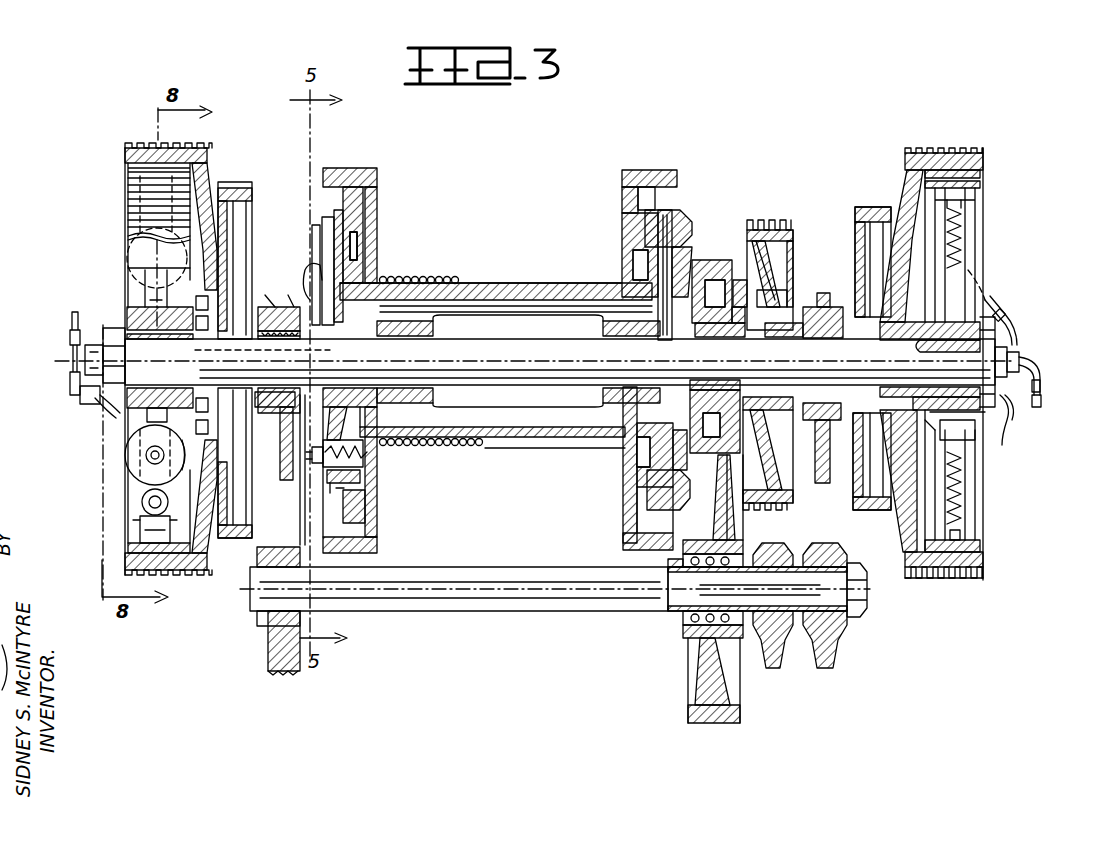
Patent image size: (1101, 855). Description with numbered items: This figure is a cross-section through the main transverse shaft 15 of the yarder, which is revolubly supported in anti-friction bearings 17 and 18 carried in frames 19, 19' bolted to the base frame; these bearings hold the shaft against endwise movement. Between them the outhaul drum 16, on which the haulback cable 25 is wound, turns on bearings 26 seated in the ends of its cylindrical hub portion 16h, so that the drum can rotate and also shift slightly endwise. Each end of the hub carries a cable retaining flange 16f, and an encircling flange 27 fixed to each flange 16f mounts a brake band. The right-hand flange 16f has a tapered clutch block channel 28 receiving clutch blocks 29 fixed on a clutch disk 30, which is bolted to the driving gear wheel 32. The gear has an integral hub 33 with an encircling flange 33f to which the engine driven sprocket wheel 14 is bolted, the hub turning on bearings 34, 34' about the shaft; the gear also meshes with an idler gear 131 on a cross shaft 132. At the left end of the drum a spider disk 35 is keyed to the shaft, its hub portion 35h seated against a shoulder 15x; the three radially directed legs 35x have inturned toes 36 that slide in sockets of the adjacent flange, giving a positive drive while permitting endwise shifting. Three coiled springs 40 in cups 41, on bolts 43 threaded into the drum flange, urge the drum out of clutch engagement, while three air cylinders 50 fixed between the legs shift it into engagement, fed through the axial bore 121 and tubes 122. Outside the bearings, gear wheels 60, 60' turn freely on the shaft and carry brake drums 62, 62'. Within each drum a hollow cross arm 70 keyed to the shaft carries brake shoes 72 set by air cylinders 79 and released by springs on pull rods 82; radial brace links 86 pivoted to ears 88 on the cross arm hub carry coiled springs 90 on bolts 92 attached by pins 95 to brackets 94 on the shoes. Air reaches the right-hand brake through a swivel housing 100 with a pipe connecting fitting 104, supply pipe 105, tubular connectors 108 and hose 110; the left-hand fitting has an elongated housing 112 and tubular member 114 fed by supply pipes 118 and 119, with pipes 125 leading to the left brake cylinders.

The sprocket wheel 14 is at (775, 220).
The shaft 15 is at (528, 387).
The shoulder 15x is at (340, 345).
The outhaul drum 16 is at (617, 460).
The cable retaining flange 16f is at (380, 232).
The cylindrical hub portion 16h is at (500, 283).
The bearing 17 is at (270, 300).
The bearing 18 is at (822, 297).
The frame 19 is at (266, 534).
The frame 19' is at (828, 576).
The haulback cable 25 is at (418, 276).
The bearing 26 is at (435, 320).
The encircling flange 27 is at (377, 182).
The tapered clutch block channel 28 is at (636, 242).
The clutch blocks 29 is at (685, 210).
The clutch disk 30 is at (705, 260).
The driving gear wheel 32 is at (740, 280).
The cylindrical hub portion 33 is at (778, 262).
The encircling flange 33f is at (782, 292).
The anti-friction bearing 34 is at (704, 342).
The anti-friction bearing 34' is at (769, 342).
The disk 35 is at (385, 430).
The radially directed legs 35x is at (358, 250).
The hub portion 35h is at (465, 447).
The inturned toes 36 is at (365, 490).
The coiled springs 40 is at (320, 462).
The cups 41 is at (330, 495).
The bolts 43 is at (363, 462).
The air cylinders 50 is at (312, 258).
The gear wheel 60 is at (243, 329).
The gear wheel 60' is at (872, 322).
The brake drum 62 is at (129, 343).
The brake drum 62' is at (963, 347).
The hollow cross arm 70 is at (147, 415).
The brake shoe 72 is at (128, 192).
The air cylinders 79 is at (130, 260).
The pull rods 82 is at (142, 502).
The links 86 is at (970, 215).
The projecting ears 88 is at (955, 430).
The coiled springs 90 is at (962, 240).
The bolt 92 is at (962, 485).
The bracket 94 is at (960, 528).
The pin 95 is at (945, 580).
The housing 100 is at (1010, 352).
The pipe connecting fitting 104 is at (1040, 372).
The air pressure supply pipe 105 is at (1035, 395).
The tubular connector 108 is at (1017, 335).
The hose 110 is at (1005, 318).
The elongated housing 112 is at (92, 345).
The tubular member 114 is at (103, 352).
The air pressure supply pipe 118 is at (80, 395).
The air pressure supply pipe 119 is at (70, 325).
The axial bore 121 is at (210, 352).
The tubes 122 is at (370, 242).
The pipes 125 is at (100, 400).
The idler gear 131 is at (695, 700).
The cross shaft 132 is at (460, 611).